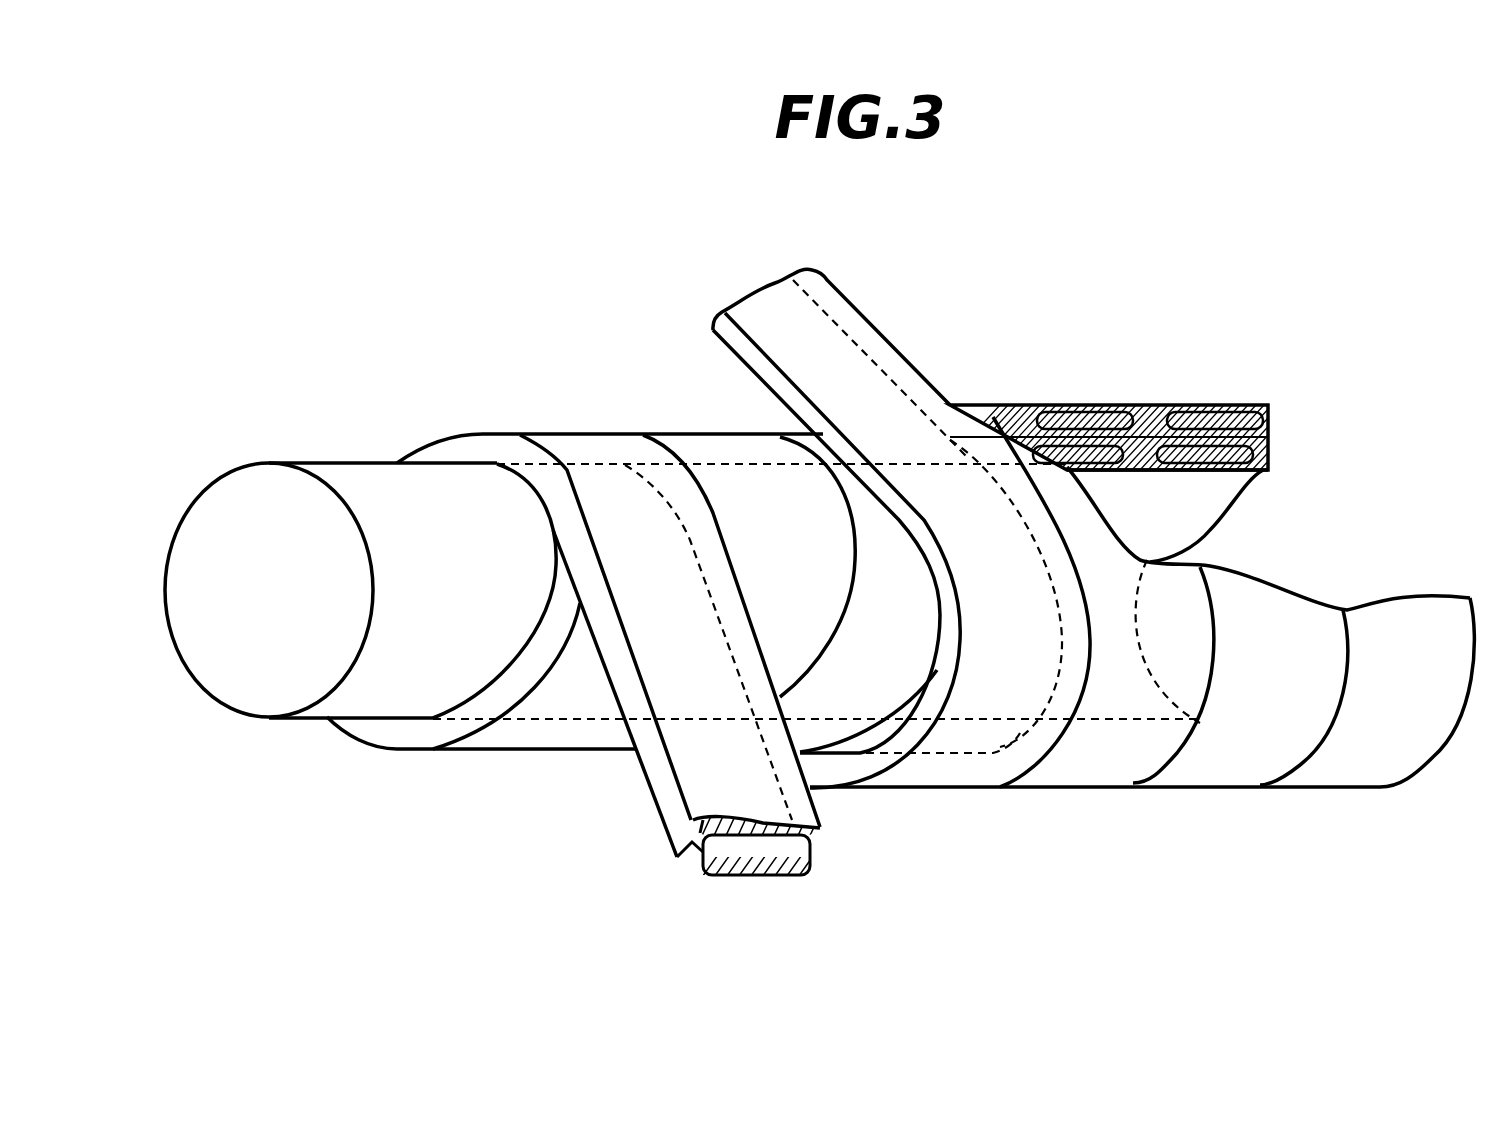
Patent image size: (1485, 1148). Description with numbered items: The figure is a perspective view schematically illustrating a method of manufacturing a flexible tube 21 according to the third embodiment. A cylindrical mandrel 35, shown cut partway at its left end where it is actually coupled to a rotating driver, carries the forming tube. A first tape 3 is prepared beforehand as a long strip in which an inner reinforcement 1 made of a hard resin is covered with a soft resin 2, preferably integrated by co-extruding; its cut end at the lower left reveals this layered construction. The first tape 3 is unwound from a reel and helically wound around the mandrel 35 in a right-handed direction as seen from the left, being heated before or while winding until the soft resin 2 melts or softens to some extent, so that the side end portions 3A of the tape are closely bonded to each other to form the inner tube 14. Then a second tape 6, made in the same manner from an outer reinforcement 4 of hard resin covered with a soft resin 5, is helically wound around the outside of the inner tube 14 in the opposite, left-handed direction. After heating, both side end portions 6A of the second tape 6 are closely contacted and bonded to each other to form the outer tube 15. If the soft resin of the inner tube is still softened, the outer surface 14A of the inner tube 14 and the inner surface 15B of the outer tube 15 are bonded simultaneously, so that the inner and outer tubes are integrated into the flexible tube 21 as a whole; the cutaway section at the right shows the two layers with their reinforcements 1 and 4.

The inner reinforcement 1 is at (770, 884).
The soft resin 2 is at (688, 868).
The first tape 3 is at (820, 807).
The side end portions 3A is at (385, 733).
The outer reinforcement 4 is at (1213, 407).
The soft resin 5 is at (1147, 417).
The second tape 6 is at (805, 313).
The side end portions 6A is at (727, 330).
The inner tube 14 is at (1285, 454).
The outer surface 14A is at (572, 434).
The outer tube 15 is at (1285, 412).
The inner surface 15B is at (810, 343).
The flexible tube 21 is at (1084, 332).
The cylindrical mandrel 35 is at (275, 510).